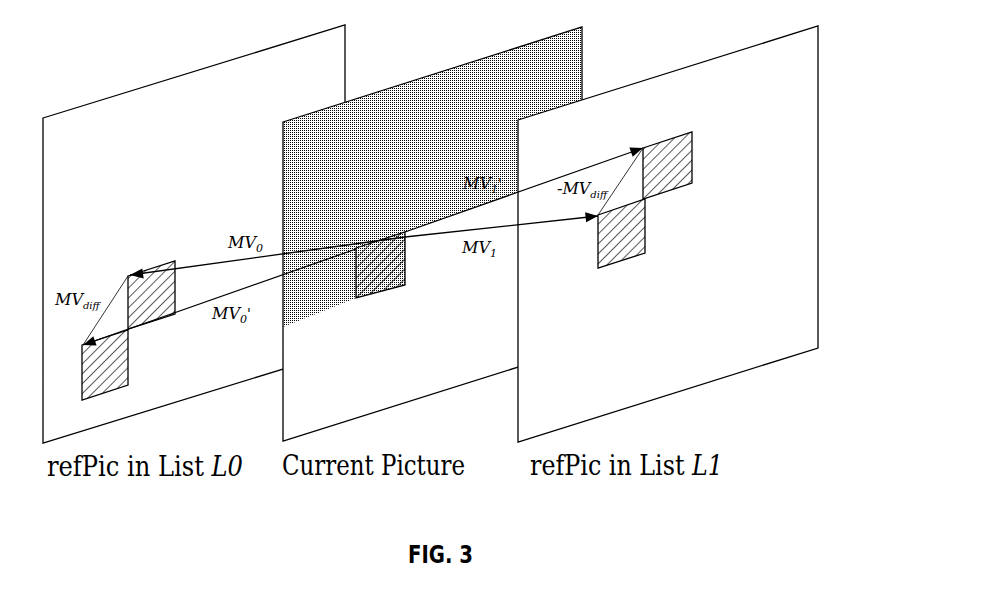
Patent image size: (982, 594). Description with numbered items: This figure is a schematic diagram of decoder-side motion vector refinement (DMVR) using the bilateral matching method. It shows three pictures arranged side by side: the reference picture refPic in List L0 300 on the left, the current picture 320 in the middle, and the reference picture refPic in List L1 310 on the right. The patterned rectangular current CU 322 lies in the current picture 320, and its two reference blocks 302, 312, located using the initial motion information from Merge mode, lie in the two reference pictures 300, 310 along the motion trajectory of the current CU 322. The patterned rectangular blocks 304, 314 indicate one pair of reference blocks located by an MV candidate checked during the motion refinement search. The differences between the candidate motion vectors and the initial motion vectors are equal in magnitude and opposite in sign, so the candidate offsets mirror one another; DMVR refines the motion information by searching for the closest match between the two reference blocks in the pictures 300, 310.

The refPic in List L0 300 is at (331, 70).
The current picture 320 is at (559, 58).
The refPic in List L1 310 is at (797, 66).
The reference block 302 is at (166, 285).
The reference block 304 is at (126, 365).
The current CU 322 is at (389, 275).
The reference block 312 is at (643, 234).
The reference block 314 is at (688, 163).